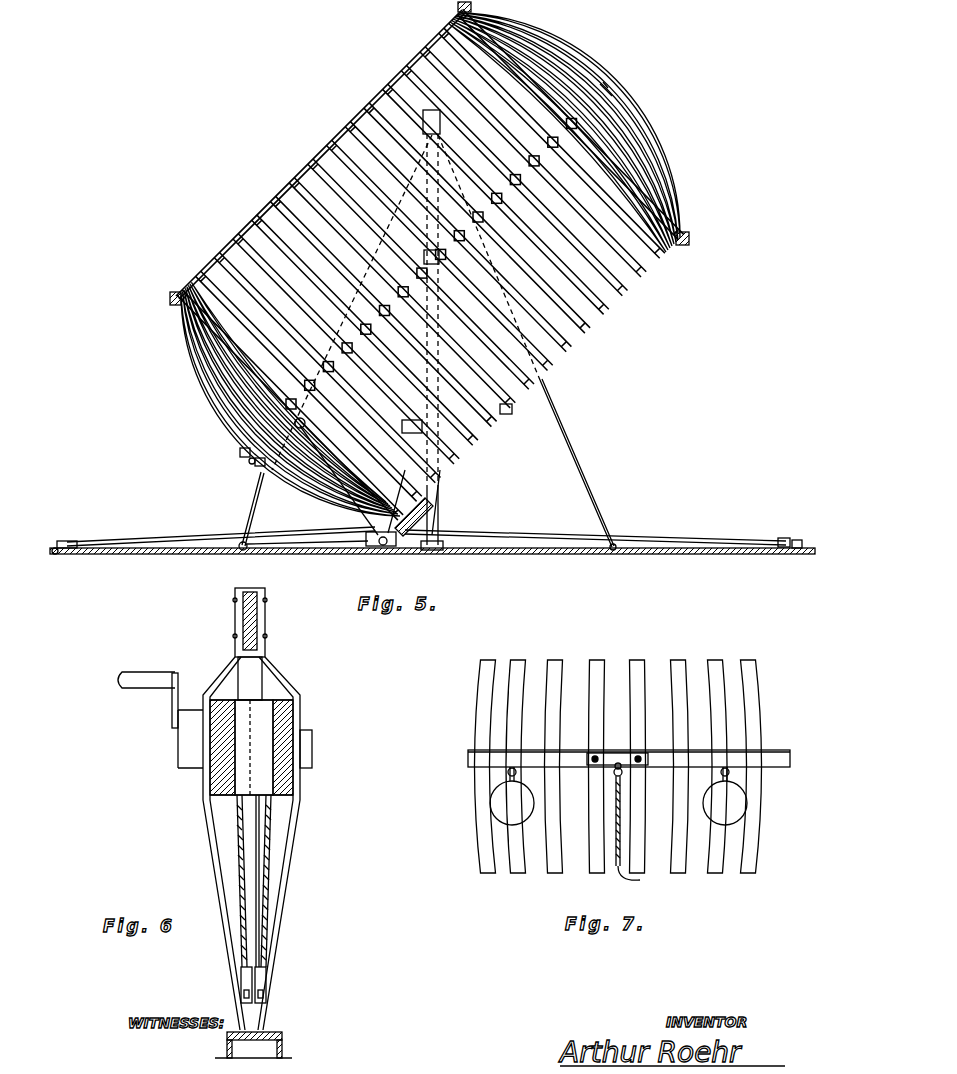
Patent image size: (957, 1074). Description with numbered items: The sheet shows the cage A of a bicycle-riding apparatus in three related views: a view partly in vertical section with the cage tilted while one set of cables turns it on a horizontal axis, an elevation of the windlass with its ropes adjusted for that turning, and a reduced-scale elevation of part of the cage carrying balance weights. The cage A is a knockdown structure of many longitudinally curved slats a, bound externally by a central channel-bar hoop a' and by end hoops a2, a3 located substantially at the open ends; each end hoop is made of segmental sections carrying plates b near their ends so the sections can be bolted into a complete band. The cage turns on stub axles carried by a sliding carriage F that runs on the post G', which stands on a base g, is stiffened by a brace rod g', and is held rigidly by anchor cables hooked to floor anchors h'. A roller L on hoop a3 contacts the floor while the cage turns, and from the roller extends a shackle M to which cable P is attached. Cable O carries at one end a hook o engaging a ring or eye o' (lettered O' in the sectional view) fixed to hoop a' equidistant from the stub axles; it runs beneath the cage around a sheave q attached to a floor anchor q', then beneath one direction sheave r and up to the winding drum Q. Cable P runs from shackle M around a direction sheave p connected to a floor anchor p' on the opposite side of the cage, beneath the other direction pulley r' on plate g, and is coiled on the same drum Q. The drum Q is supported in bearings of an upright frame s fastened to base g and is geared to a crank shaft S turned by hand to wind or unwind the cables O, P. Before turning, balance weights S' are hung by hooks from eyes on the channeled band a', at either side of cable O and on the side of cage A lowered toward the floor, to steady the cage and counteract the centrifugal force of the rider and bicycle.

In FIG. 5, the cage A is at (430, 272).
In FIG. 7, the cage A is at (487, 857).
In FIG. 5, the slats a is at (284, 403).
In FIG. 7, the slats a is at (687, 773).
In FIG. 5, the central external band or hoop a' is at (415, 274).
In FIG. 7, the central external band or hoop a' is at (638, 738).
In FIG. 5, the end band or hoop a2 is at (470, 9).
In FIG. 5, the end band or hoop a3 is at (690, 236).
In FIG. 5, the floor anchor h' is at (444, 342).
In FIG. 5, the sliding carriage F is at (418, 261).
In FIG. 5, the post or upright G' is at (458, 327).
In FIG. 5, the winding drum Q is at (445, 410).
In FIG. 6, the winding drum Q is at (270, 705).
In FIG. 5, the cable O is at (534, 506).
In FIG. 6, the cable O is at (294, 881).
In FIG. 7, the cable O is at (637, 836).
In FIG. 5, the cable P is at (208, 538).
In FIG. 6, the cable P is at (238, 862).
In FIG. 5, the balance weights S' is at (233, 429).
In FIG. 7, the balance weights S' is at (621, 797).
In FIG. 5, the ring or eye O' is at (220, 470).
In FIG. 5, the plates b is at (262, 472).
In FIG. 5, the direction sheave p is at (80, 527).
In FIG. 5, the floor anchor p' is at (70, 565).
In FIG. 5, the sheave q is at (769, 520).
In FIG. 5, the floor anchor q' is at (792, 520).
In FIG. 5, the shackle M is at (367, 548).
In FIG. 5, the roller L is at (386, 548).
In FIG. 6, the brace rod g' is at (228, 622).
In FIG. 6, the crank shaft S is at (215, 720).
In FIG. 6, the upright frame s is at (296, 838).
In FIG. 6, the direction sheave r is at (284, 981).
In FIG. 6, the direction pulley r' is at (222, 984).
In FIG. 6, the base plate g is at (274, 1042).
In FIG. 7, the ring or eye o' is at (617, 735).
In FIG. 7, the hook o is at (594, 786).